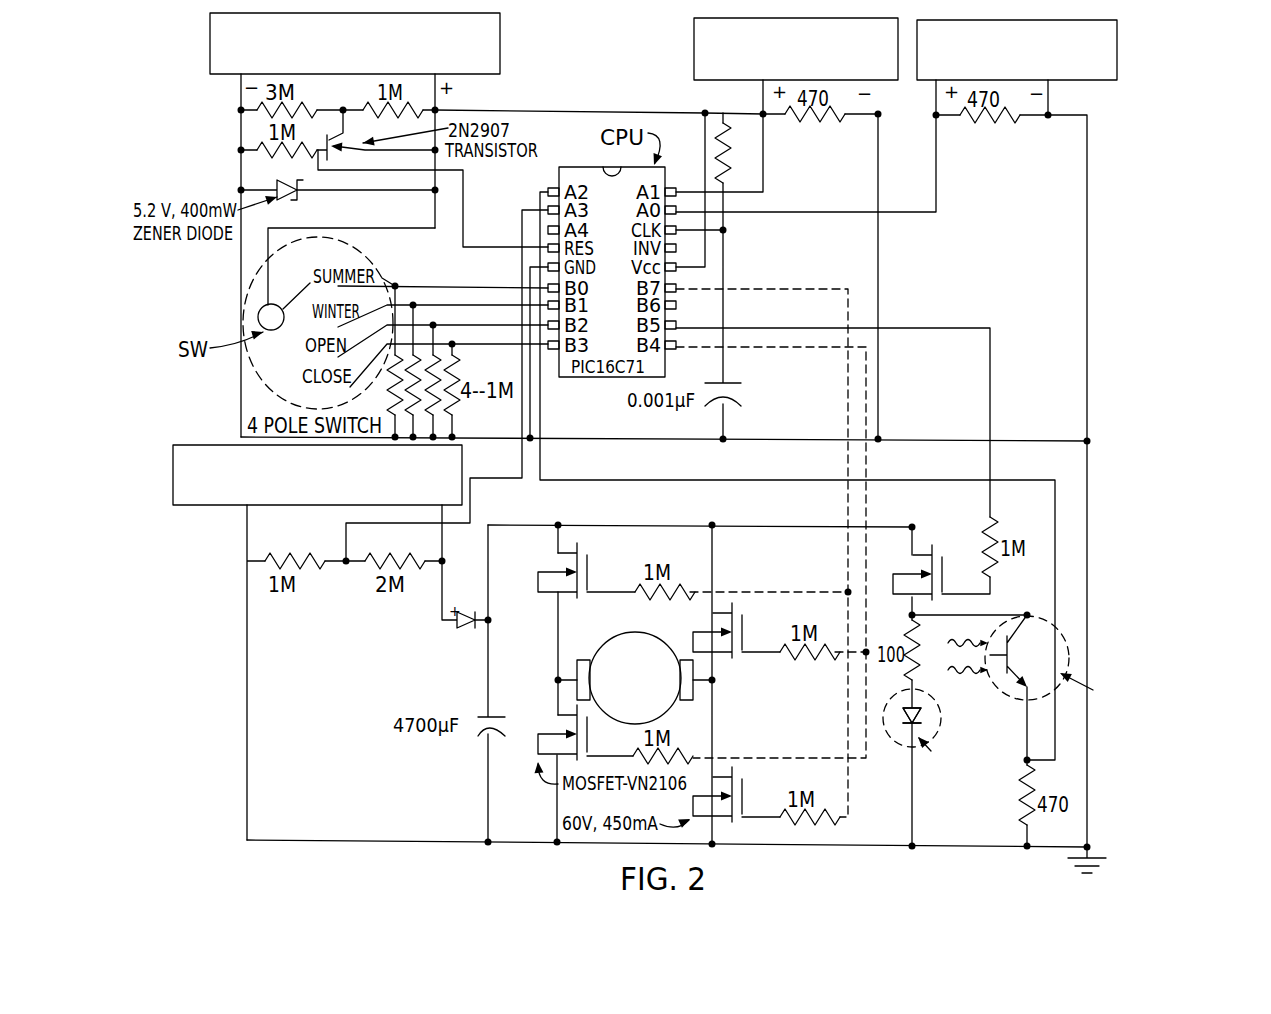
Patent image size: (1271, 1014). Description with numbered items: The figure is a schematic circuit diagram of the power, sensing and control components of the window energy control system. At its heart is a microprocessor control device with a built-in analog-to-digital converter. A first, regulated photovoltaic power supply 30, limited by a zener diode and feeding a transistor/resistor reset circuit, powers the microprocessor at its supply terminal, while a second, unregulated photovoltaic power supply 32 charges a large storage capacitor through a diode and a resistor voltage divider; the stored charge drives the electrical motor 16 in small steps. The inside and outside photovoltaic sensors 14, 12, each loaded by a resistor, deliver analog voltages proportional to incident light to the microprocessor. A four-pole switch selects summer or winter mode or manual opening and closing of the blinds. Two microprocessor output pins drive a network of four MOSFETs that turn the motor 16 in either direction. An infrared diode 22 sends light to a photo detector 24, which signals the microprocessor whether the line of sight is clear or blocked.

The first photovoltaic power supply 30 is at (228, 77).
The second photovoltaic power supply 32 is at (222, 507).
The photovoltaic sensor 14 is at (693, 63).
The photovoltaic sensor 12 is at (1117, 66).
The electrical motor 16 is at (622, 633).
The infrared diode 22 is at (899, 736).
The photo detector 24 is at (1063, 634).